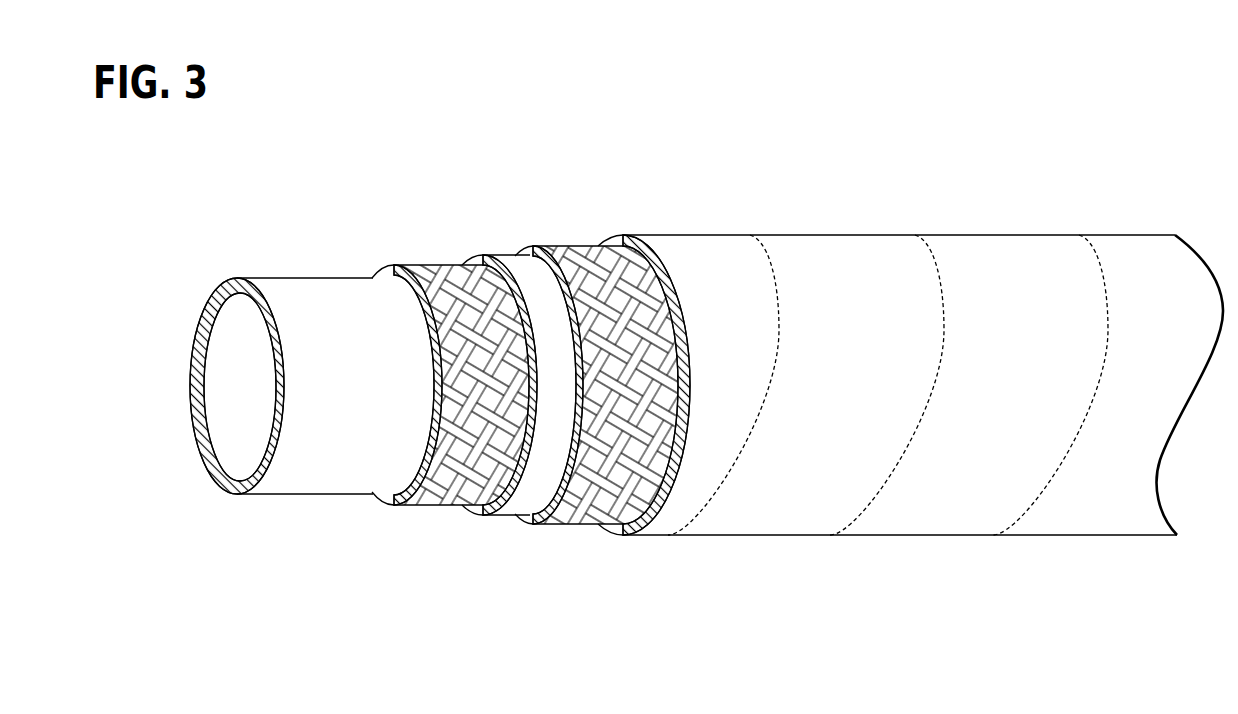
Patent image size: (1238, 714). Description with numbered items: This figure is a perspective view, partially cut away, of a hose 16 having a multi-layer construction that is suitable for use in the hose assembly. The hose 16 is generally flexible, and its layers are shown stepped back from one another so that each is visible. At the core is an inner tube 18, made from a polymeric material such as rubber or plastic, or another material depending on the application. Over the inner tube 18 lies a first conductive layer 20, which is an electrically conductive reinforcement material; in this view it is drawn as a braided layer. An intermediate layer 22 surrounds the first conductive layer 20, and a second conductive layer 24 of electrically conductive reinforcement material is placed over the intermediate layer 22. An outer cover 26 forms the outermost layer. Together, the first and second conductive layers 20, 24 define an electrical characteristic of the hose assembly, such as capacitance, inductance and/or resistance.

The hose 16 is at (706, 379).
The inner tube 18 is at (314, 277).
The first conductive layer 20 is at (435, 265).
The intermediate layer 22 is at (507, 256).
The second conductive layer 24 is at (568, 523).
The outer cover 26 is at (835, 234).